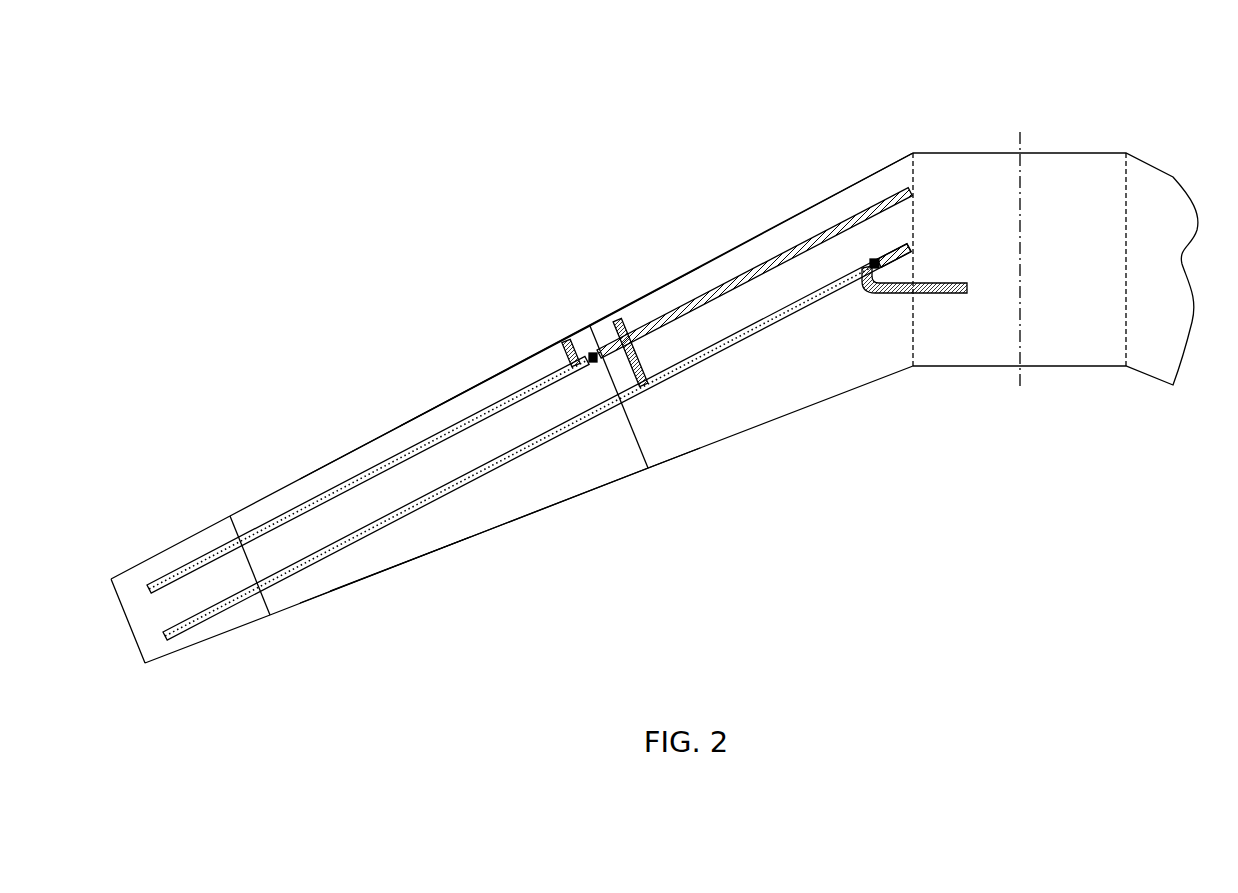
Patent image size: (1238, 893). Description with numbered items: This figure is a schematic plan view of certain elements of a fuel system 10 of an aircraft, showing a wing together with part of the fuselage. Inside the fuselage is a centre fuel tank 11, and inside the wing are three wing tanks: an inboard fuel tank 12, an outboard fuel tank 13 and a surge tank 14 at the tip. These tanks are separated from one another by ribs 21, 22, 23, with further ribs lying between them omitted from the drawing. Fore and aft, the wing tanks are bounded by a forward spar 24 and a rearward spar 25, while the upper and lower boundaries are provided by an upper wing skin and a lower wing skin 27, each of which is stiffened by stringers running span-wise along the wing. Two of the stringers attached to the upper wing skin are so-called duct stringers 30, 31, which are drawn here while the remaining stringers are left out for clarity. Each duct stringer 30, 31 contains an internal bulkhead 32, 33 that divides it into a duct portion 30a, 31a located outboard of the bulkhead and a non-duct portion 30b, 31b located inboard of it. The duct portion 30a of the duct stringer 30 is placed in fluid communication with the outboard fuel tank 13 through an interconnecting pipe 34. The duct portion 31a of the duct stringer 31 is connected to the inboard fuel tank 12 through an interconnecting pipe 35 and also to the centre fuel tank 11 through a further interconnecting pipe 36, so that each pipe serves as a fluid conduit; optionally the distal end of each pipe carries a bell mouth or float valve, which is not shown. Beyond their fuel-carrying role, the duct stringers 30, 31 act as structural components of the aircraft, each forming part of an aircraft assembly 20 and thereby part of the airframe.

The fuel system 10 is at (512, 376).
The aircraft assembly 20 is at (745, 176).
The centre fuel tank 11 is at (994, 236).
The inboard fuel tank 12 is at (780, 387).
The outboard fuel tank 13 is at (569, 481).
The surge tank 14 is at (203, 606).
The rib 21 is at (912, 328).
The rib 22 is at (637, 430).
The rib 23 is at (233, 524).
The forward spar 24 is at (487, 378).
The rearward spar 25 is at (440, 548).
The lower wing skin 27 is at (387, 548).
The duct stringer 30 is at (529, 383).
The duct portion 30a is at (410, 447).
The non-duct portion 30b is at (712, 285).
The duct stringer 31 is at (537, 406).
The duct portion 31a is at (305, 567).
The non-duct portion 31b is at (897, 247).
The internal bulkhead 32 is at (593, 362).
The internal bulkhead 33 is at (870, 260).
The interconnecting pipe 34 is at (568, 340).
The interconnecting pipe 35 is at (596, 350).
The interconnecting pipe 36 is at (942, 296).